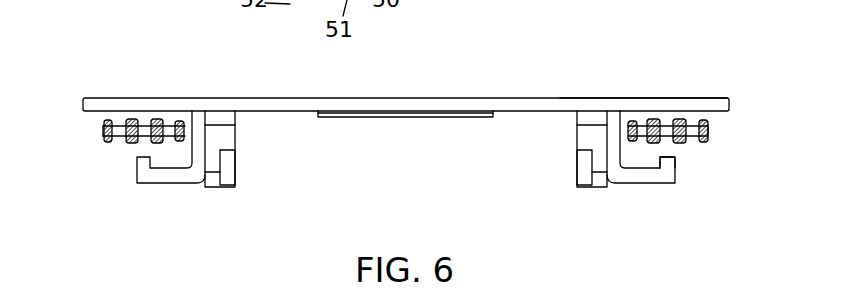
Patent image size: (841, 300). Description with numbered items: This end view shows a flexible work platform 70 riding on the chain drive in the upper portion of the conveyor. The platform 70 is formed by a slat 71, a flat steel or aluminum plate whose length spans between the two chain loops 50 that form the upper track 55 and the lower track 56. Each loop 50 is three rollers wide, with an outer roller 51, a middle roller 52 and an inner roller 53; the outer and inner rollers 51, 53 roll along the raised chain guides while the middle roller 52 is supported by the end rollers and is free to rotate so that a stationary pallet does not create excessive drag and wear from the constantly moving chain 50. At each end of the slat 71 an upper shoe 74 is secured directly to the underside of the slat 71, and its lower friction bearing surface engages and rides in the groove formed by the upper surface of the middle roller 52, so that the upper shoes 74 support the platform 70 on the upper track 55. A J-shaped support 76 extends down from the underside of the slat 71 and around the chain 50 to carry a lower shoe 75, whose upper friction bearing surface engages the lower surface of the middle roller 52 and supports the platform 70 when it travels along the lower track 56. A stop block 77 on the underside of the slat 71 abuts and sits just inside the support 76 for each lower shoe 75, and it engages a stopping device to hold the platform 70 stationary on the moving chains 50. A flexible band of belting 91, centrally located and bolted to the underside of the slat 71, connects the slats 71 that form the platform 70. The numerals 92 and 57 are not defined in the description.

The flexible work platform 70 is at (537, 94).
The slat 71 is at (580, 98).
The upper shoe 74 is at (665, 116).
The lower shoe 75 is at (673, 166).
The J-shaped support 76 is at (651, 186).
The stop block 77 is at (604, 190).
The flexible band of belting 91 is at (465, 119).
The pad 92 is at (428, 119).
The chain loop 50 is at (97, 141).
The outer roller 51 is at (118, 141).
The middle roller 52 is at (143, 142).
The inner roller 53 is at (161, 118).
The upper track 55 is at (101, 136).
The lower track 56 is at (171, 147).
The frame rail 57 is at (220, 149).